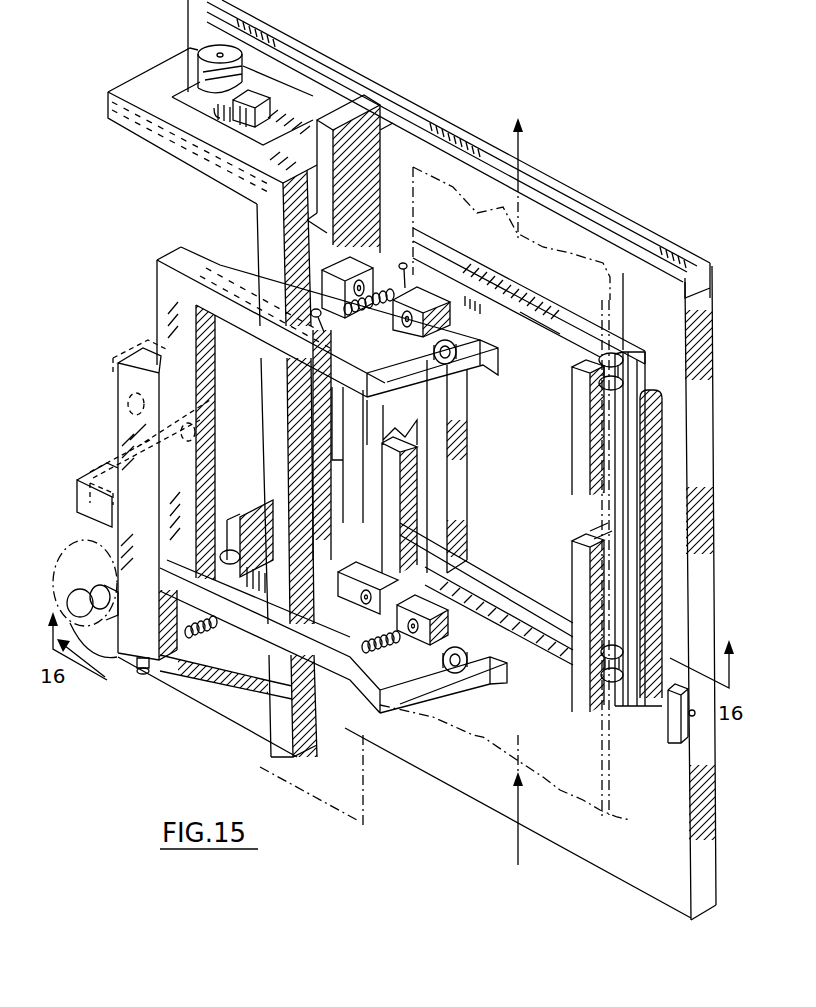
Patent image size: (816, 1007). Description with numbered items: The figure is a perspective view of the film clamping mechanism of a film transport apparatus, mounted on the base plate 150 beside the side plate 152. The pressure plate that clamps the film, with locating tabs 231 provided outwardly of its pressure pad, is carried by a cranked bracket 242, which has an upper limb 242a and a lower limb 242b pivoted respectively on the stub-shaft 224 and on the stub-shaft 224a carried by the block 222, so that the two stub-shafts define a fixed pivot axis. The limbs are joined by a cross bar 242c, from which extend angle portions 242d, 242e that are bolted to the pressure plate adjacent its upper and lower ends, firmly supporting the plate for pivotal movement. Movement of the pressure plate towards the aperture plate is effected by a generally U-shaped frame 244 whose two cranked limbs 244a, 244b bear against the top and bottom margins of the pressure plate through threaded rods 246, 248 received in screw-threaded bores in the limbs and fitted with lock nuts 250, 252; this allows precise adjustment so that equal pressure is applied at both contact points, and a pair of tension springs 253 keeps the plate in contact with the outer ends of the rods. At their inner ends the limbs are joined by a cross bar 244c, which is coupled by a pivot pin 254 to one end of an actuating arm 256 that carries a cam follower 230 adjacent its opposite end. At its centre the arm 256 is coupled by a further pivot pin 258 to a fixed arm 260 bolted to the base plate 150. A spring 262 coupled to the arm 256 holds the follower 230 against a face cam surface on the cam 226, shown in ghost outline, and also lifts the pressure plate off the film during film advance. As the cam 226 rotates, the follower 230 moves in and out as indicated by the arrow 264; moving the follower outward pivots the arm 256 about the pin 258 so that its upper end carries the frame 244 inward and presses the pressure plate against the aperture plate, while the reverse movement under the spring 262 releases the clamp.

The base plate 150 is at (673, 416).
The side plate 152 is at (388, 121).
The cranked bracket 242 is at (178, 161).
The upper limb 242a is at (225, 147).
The lower limb 242b is at (187, 692).
The cross bar 242c is at (270, 380).
The angle portion 242d is at (432, 300).
The angle portion 242e is at (413, 593).
The stub-shaft 224 is at (208, 50).
The U-shaped frame 244 is at (154, 299).
The cranked limb 244a is at (332, 311).
The cranked limb 244b is at (333, 657).
The cross bar 244c is at (176, 307).
The threaded rod 246 is at (491, 312).
The threaded rod 248 is at (498, 638).
The lock nut 250 is at (452, 365).
The lock nut 252 is at (460, 676).
The tension springs 253 is at (376, 257).
The stub-shaft 224a is at (221, 547).
The block 222 is at (242, 553).
The locating tabs 231 is at (596, 418).
The cam 226 is at (70, 557).
The cam follower 230 is at (103, 582).
The arrow 264 is at (136, 668).
The spring 262 is at (202, 636).
The pivot pin 258 is at (108, 470).
The pivot pin 254 is at (123, 384).
The actuating arm 256 is at (113, 412).
The fixed arm 260 is at (115, 437).